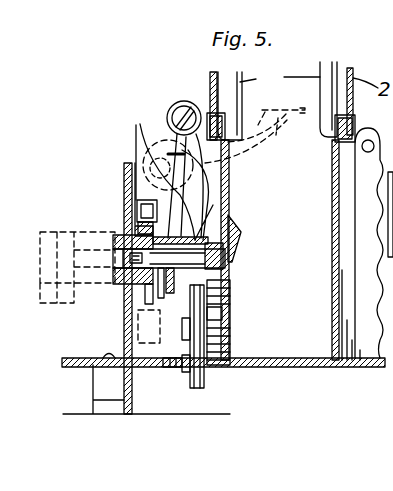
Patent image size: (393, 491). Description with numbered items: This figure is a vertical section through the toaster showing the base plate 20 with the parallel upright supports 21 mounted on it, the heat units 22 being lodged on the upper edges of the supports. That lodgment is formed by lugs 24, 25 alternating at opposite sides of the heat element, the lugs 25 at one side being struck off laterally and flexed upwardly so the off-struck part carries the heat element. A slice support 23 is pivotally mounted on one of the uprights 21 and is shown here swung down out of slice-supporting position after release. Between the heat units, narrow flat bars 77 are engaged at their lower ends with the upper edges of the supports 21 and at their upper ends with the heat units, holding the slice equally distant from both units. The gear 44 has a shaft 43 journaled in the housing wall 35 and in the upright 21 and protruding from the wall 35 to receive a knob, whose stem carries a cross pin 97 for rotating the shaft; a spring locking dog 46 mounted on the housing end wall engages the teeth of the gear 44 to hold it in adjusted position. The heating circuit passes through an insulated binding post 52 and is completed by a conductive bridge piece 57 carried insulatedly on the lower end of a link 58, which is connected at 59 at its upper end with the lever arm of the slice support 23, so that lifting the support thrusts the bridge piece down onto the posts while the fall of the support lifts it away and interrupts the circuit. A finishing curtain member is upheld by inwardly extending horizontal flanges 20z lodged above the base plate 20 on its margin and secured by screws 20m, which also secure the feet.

The base plate 20 is at (292, 366).
The horizontal flanges 20z is at (68, 355).
The screws 20m is at (111, 356).
The supports 21 is at (358, 296).
The heat units 22 is at (210, 80).
The slice support 23 is at (275, 140).
The lugs 24 is at (283, 130).
The lugs 25 is at (337, 130).
The housing wall 35 is at (124, 177).
The shaft 43 is at (117, 238).
The gear 44 is at (127, 237).
The spring locking dog 46 is at (153, 182).
The binding post 52 is at (190, 372).
The conductive bridge piece 57 is at (150, 303).
The link 58 is at (169, 167).
The connection 59 is at (178, 111).
The narrow flat bars 77 is at (280, 80).
The cross pin 97 is at (130, 264).